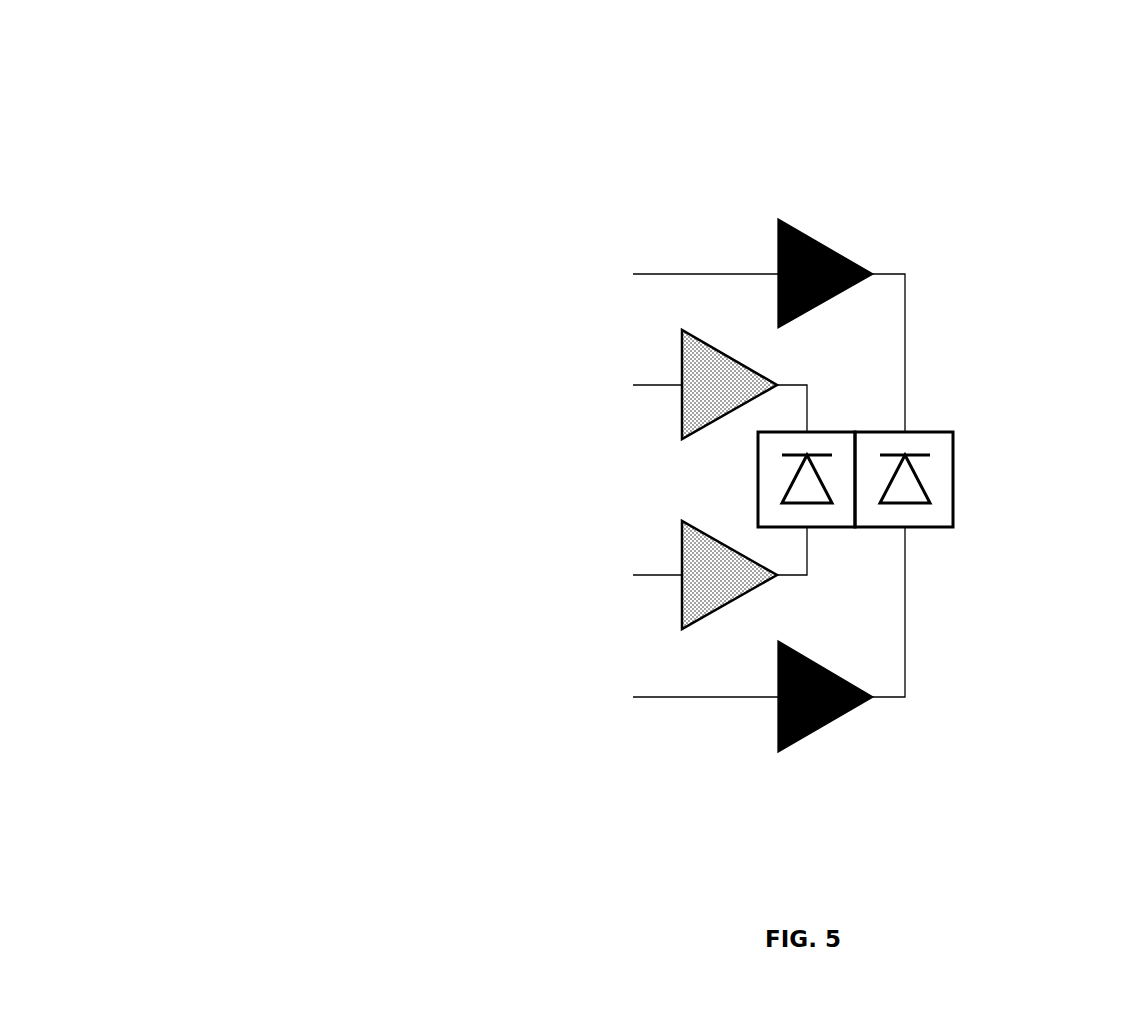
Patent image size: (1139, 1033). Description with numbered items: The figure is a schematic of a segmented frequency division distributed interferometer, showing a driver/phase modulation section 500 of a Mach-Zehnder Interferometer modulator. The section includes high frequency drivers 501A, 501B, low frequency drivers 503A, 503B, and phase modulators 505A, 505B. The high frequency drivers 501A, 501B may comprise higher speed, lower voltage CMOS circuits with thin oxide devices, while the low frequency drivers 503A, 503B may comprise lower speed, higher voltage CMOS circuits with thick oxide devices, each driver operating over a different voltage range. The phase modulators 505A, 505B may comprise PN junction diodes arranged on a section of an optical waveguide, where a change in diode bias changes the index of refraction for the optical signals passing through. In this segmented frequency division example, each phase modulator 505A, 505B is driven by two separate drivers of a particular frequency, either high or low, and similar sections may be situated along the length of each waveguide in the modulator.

The driver/phase modulation section 500 is at (214, 115).
The high frequency driver 501A is at (682, 348).
The high frequency driver 501B is at (682, 615).
The low frequency driver 503A is at (778, 244).
The low frequency driver 503B is at (778, 733).
The phase modulator 505A is at (758, 467).
The phase modulator 505B is at (956, 460).